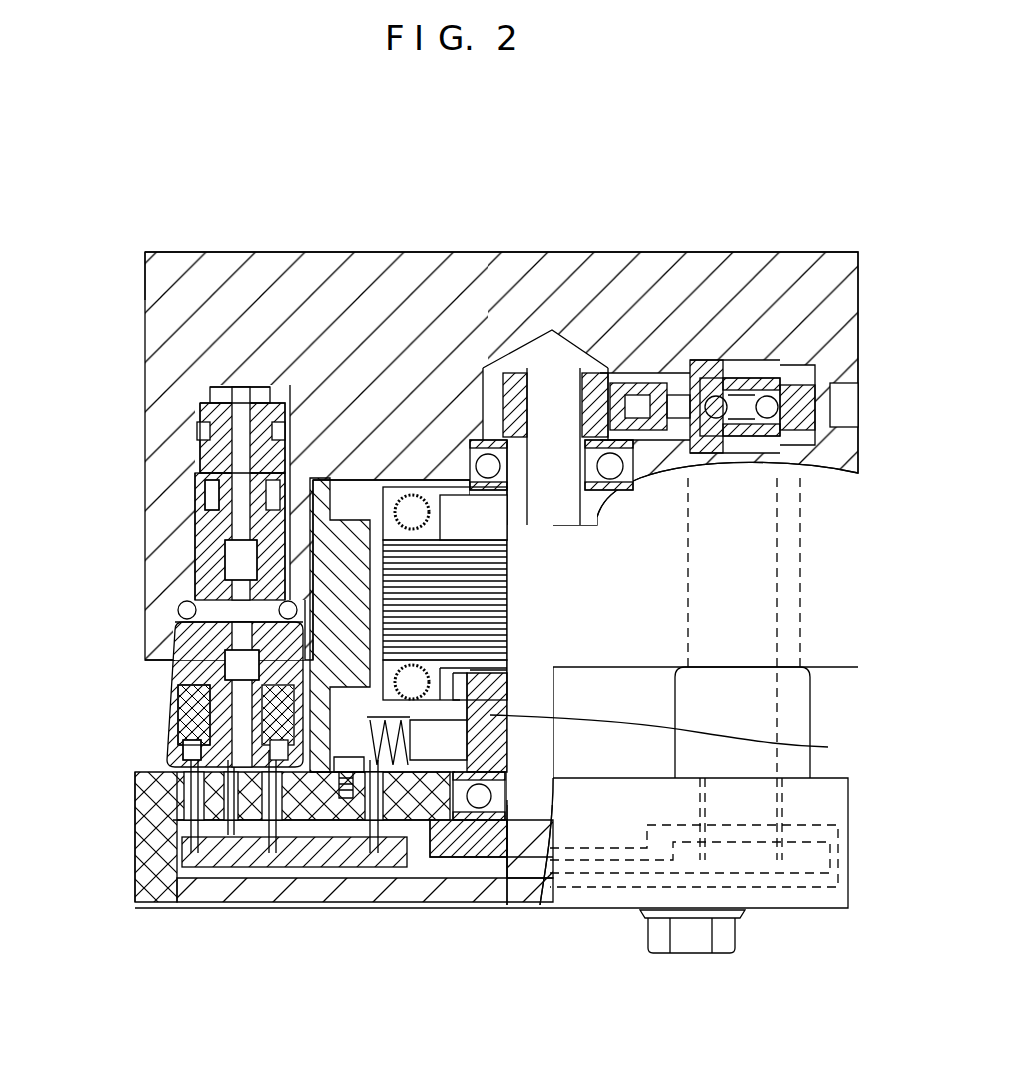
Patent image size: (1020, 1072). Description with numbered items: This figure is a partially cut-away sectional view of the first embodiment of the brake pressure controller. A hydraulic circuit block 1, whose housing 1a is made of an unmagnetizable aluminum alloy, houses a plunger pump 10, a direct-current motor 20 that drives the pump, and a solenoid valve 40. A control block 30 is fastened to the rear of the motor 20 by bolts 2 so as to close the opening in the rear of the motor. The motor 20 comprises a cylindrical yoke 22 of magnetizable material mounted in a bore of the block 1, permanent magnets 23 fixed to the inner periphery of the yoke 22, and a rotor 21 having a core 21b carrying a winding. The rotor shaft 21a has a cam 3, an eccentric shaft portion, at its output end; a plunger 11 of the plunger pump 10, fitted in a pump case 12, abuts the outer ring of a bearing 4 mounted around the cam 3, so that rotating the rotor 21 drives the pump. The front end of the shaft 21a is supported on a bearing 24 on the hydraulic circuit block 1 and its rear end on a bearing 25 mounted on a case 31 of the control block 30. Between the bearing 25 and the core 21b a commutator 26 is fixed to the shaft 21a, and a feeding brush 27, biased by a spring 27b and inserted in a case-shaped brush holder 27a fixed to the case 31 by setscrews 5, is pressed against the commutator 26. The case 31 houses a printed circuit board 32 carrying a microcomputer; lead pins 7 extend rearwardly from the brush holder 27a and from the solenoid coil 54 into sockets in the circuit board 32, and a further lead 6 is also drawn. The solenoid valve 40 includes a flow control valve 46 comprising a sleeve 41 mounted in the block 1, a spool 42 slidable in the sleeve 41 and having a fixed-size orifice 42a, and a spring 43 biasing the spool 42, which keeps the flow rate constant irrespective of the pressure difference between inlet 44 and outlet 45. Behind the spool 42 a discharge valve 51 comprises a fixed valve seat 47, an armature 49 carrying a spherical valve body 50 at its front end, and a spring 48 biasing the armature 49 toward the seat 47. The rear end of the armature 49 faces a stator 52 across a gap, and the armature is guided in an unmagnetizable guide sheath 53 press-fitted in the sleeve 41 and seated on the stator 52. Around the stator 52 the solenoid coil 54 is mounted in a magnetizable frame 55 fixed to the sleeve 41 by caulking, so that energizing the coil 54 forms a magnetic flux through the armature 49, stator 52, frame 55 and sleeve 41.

The hydraulic circuit block 1 is at (811, 247).
The housing 1a is at (160, 262).
The bolts 2 is at (723, 938).
The cam 3 is at (546, 400).
The bearing 4 is at (607, 345).
The setscrews 5 is at (343, 795).
The lead 6 is at (374, 855).
The lead pins 7 is at (212, 858).
The plunger pump 10 is at (679, 366).
The plunger 11 is at (627, 372).
The pump case 12 is at (758, 365).
The direct-current motor 20 is at (355, 476).
The rotor 21 is at (442, 485).
The shaft 21a is at (552, 803).
The core 21b is at (432, 498).
The cylindrical yoke 22 is at (308, 478).
The permanent magnets 23 is at (323, 777).
The bearing 24 is at (472, 440).
The bearing 25 is at (539, 800).
The commutator 26 is at (677, 740).
The feeding brush 27 is at (430, 780).
The brush holder 27a is at (393, 793).
The spring 27b is at (447, 792).
The control block 30 is at (838, 912).
The case 31 is at (802, 905).
The printed circuit board 32 is at (199, 855).
The solenoid valve 40 is at (817, 698).
The sleeve 41 is at (230, 430).
The spool 42 is at (222, 470).
The fixed-size orifice 42a is at (203, 545).
The spring 43 is at (222, 568).
The inlet 44 is at (207, 393).
The outlet 45 is at (208, 500).
The flow control valve 46 is at (88, 323).
The fixed valve seat 47 is at (185, 604).
The spring 48 is at (203, 695).
The armature 49 is at (205, 665).
The spherical valve body 50 is at (196, 627).
The discharge valve 51 is at (78, 615).
The stator 52 is at (165, 795).
The guide sheath 53 is at (186, 728).
The solenoid coil 54 is at (232, 781).
The frame 55 is at (165, 850).